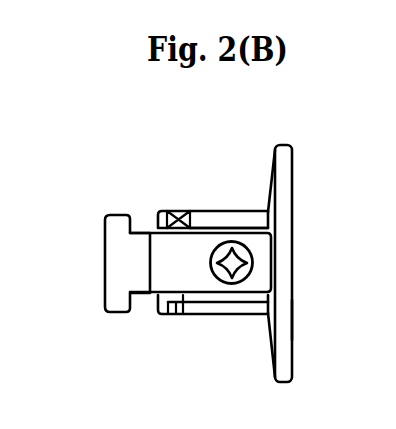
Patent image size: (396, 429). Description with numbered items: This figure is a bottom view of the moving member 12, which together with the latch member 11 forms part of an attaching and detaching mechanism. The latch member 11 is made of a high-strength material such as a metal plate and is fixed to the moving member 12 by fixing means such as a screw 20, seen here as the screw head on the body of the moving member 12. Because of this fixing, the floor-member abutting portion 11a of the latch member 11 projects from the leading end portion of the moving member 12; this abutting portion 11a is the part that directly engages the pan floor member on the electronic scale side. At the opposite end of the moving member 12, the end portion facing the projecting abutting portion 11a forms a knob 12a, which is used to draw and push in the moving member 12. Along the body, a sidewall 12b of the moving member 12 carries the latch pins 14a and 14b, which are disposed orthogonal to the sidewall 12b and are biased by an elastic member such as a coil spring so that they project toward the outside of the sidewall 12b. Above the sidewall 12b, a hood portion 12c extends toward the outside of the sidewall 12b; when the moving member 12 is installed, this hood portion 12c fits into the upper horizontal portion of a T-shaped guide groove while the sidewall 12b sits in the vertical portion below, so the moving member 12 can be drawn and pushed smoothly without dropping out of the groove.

The latch member 11 is at (188, 254).
The floor-member abutting portion 11a is at (123, 276).
The moving member 12 is at (285, 260).
The knob 12a is at (290, 318).
The sidewall 12b is at (242, 214).
The hood portion 12c is at (215, 219).
The latch pin 14a is at (173, 318).
The latch pin 14b is at (172, 211).
The screw 20 is at (254, 258).